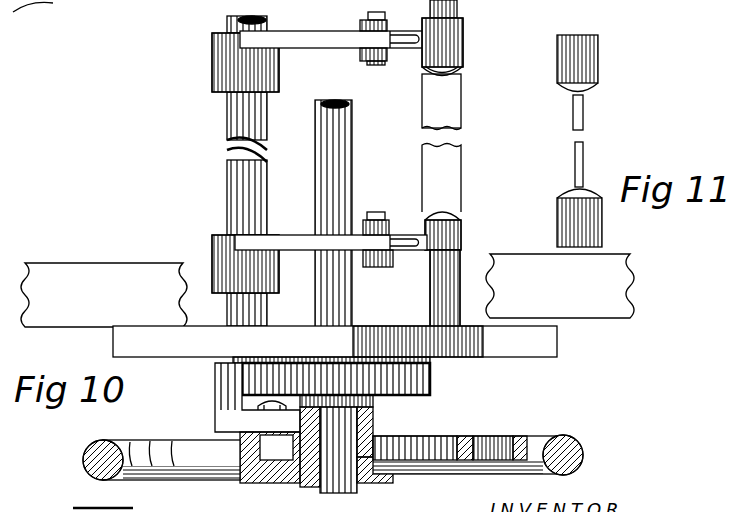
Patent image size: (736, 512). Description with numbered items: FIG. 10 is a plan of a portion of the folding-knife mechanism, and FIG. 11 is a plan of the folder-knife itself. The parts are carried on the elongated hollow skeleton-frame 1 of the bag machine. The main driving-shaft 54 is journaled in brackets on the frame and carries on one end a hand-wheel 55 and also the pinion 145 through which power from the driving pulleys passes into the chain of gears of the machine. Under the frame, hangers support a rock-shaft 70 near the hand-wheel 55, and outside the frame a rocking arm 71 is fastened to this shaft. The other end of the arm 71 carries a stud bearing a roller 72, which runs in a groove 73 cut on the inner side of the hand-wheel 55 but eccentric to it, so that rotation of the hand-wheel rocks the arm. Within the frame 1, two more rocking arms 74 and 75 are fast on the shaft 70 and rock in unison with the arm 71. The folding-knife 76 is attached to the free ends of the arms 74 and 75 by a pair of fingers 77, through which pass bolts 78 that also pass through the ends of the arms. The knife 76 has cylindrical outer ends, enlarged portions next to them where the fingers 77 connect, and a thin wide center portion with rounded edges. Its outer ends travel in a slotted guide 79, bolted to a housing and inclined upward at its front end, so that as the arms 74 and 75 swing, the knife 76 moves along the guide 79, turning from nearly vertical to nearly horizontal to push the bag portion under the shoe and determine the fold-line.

In FIG. 10, the skeleton-frame 1 is at (327, 290).
In FIG. 10, the main driving-shaft 54 is at (348, 296).
In FIG. 10, the hand-wheel 55 is at (352, 458).
In FIG. 10, the rock-shaft 70 is at (231, 163).
In FIG. 10, the rocking arm 71 is at (237, 397).
In FIG. 10, the roller 72 is at (316, 447).
In FIG. 10, the groove 73 is at (478, 442).
In FIG. 10, the rocking arm 74 is at (323, 61).
In FIG. 10, the rocking arm 75 is at (319, 252).
In FIG. 10, the folding-knife 76 is at (458, 143).
In FIG. 11, the folding-knife 76 is at (588, 141).
In FIG. 10, the fingers 77 is at (425, 163).
In FIG. 10, the bolts 78 is at (366, 133).
In FIG. 10, the slotted guide 79 is at (335, 344).
In FIG. 10, the pinion 145 is at (357, 385).